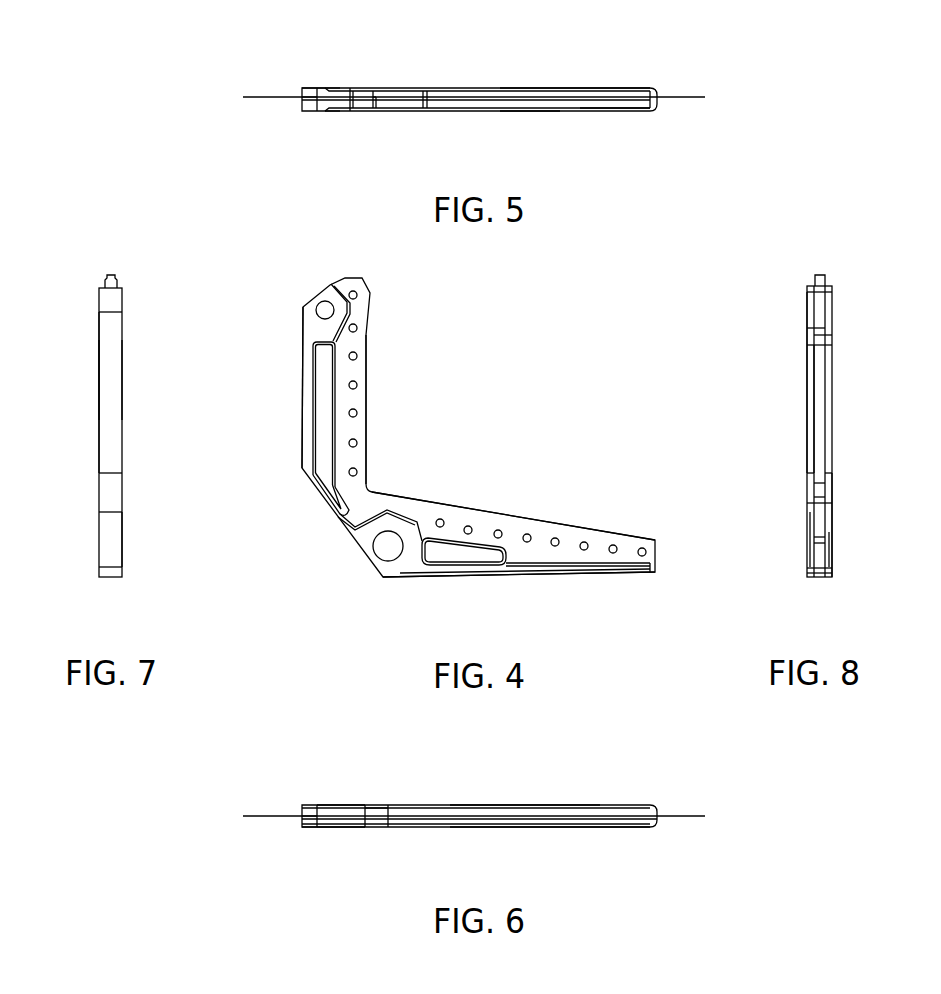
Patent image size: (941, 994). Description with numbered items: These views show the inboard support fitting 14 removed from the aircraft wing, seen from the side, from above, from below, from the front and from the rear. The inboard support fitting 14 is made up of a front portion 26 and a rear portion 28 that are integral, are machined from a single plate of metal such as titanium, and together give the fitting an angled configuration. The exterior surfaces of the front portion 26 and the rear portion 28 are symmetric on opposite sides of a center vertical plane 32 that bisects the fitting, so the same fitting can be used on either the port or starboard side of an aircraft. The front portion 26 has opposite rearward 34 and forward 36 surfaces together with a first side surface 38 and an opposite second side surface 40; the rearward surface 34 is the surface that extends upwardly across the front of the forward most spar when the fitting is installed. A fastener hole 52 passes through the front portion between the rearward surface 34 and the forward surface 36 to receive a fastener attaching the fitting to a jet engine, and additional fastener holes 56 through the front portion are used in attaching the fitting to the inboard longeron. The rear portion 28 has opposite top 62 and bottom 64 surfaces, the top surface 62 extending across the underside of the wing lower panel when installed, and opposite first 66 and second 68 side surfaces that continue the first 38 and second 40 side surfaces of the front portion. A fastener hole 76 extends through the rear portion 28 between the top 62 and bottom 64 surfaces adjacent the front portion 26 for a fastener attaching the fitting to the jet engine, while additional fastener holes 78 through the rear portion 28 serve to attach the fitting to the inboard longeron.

In FIG. 5, the inboard support fitting 14 is at (487, 80).
In FIG. 4, the inboard support fitting 14 is at (400, 462).
In FIG. 7, the inboard support fitting 14 is at (82, 430).
In FIG. 8, the inboard support fitting 14 is at (846, 426).
In FIG. 6, the inboard support fitting 14 is at (410, 838).
In FIG. 5, the front portion 26 is at (298, 84).
In FIG. 4, the front portion 26 is at (300, 370).
In FIG. 7, the front portion 26 is at (98, 455).
In FIG. 8, the front portion 26 is at (803, 385).
In FIG. 6, the front portion 26 is at (300, 832).
In FIG. 5, the rear portion 28 is at (598, 86).
In FIG. 4, the rear portion 28 is at (550, 582).
In FIG. 8, the rear portion 28 is at (834, 540).
In FIG. 6, the rear portion 28 is at (608, 832).
In FIG. 5, the center vertical plane 32 is at (683, 96).
In FIG. 6, the center vertical plane 32 is at (680, 818).
In FIG. 5, the rearward surface 34 is at (374, 100).
In FIG. 4, the rearward surface 34 is at (367, 356).
In FIG. 8, the rearward surface 34 is at (818, 379).
In FIG. 5, the forward surface 36 is at (300, 103).
In FIG. 4, the forward surface 36 is at (302, 413).
In FIG. 7, the forward surface 36 is at (110, 375).
In FIG. 6, the forward surface 36 is at (300, 820).
In FIG. 5, the first side surface 38 is at (319, 88).
In FIG. 7, the first side surface 38 is at (99, 410).
In FIG. 8, the first side surface 38 is at (830, 330).
In FIG. 6, the first side surface 38 is at (340, 805).
In FIG. 5, the second side surface 40 is at (322, 111).
In FIG. 4, the second side surface 40 is at (325, 458).
In FIG. 7, the second side surface 40 is at (122, 397).
In FIG. 8, the second side surface 40 is at (810, 342).
In FIG. 6, the second side surface 40 is at (345, 828).
In FIG. 4, the fastener hole 52 is at (318, 306).
In FIG. 4, the additional fastener holes 56 is at (360, 410).
In FIG. 5, the top surface 62 is at (612, 108).
In FIG. 4, the top surface 62 is at (540, 524).
In FIG. 8, the top surface 62 is at (818, 523).
In FIG. 4, the bottom surface 64 is at (605, 570).
In FIG. 7, the bottom surface 64 is at (110, 578).
In FIG. 8, the bottom surface 64 is at (818, 578).
In FIG. 6, the bottom surface 64 is at (397, 808).
In FIG. 5, the first side surface 66 is at (530, 88).
In FIG. 7, the first side surface 66 is at (99, 540).
In FIG. 8, the first side surface 66 is at (828, 553).
In FIG. 6, the first side surface 66 is at (530, 805).
In FIG. 5, the second side surface 68 is at (528, 111).
In FIG. 4, the second side surface 68 is at (481, 535).
In FIG. 7, the second side surface 68 is at (122, 540).
In FIG. 8, the second side surface 68 is at (808, 545).
In FIG. 6, the second side surface 68 is at (530, 828).
In FIG. 4, the fastener hole 76 is at (382, 556).
In FIG. 4, the additional fastener holes 78 is at (654, 552).